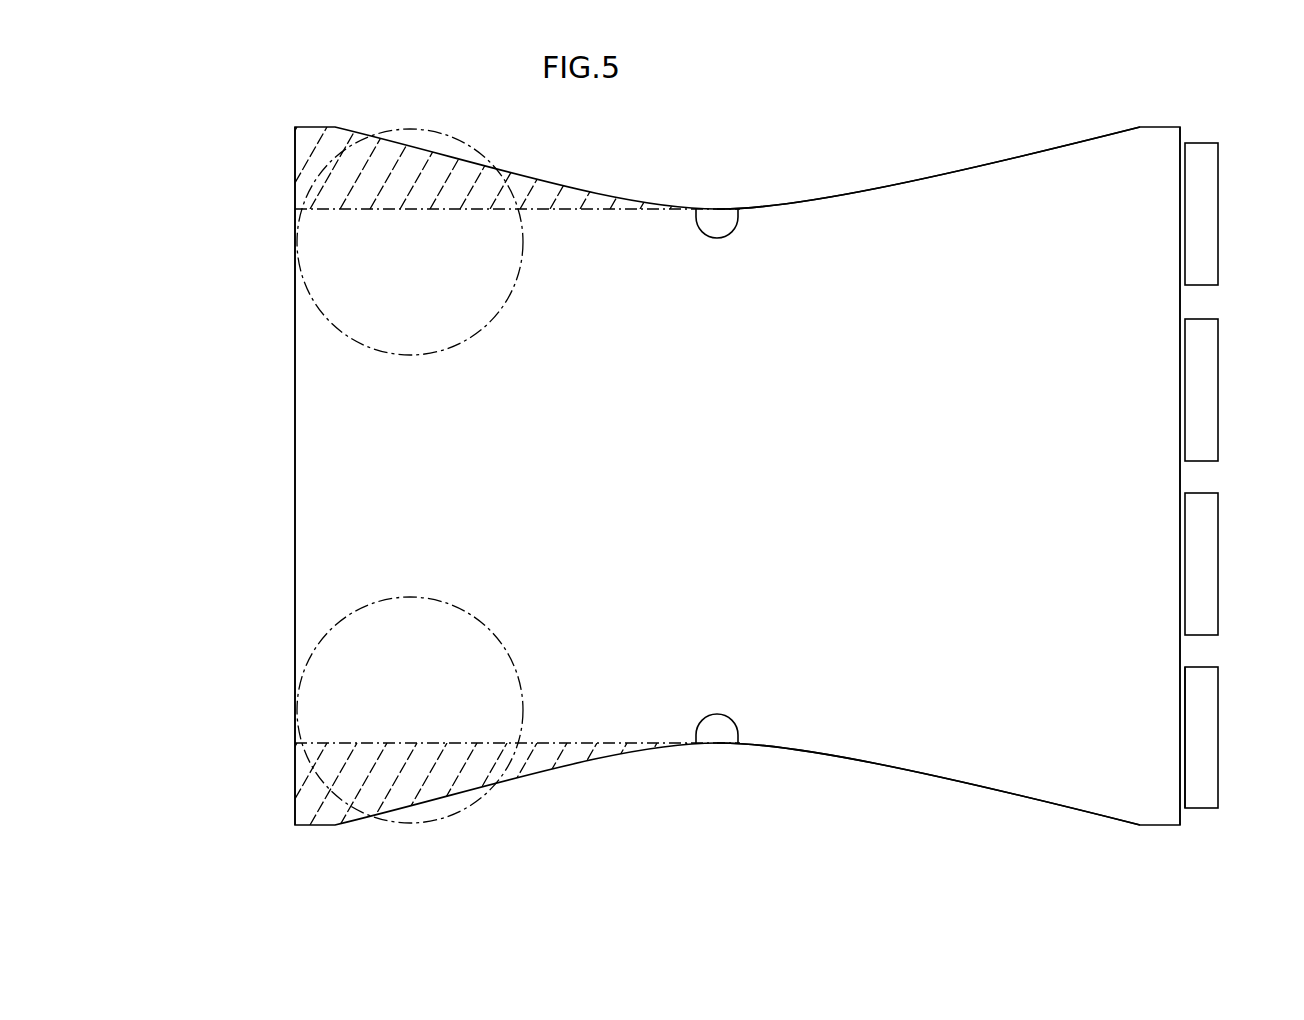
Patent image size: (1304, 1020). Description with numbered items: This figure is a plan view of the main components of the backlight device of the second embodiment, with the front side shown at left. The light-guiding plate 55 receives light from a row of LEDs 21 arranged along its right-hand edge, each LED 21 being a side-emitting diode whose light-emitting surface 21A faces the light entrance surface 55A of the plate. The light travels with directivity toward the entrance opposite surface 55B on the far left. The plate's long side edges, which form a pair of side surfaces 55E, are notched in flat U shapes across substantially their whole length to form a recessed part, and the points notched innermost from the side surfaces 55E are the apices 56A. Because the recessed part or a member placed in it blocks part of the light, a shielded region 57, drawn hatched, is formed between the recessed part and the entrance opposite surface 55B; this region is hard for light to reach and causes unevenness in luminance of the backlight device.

The light-guiding plate 55 is at (808, 190).
The light entrance surface 55A is at (1180, 300).
The entrance opposite surface 55B is at (295, 436).
The side surfaces 55E is at (905, 186).
The apices of the recessed part 56A is at (697, 206).
The shielded region 57 is at (302, 182).
The LEDs 21 is at (1208, 705).
The light-emitting surface 21A is at (1185, 733).